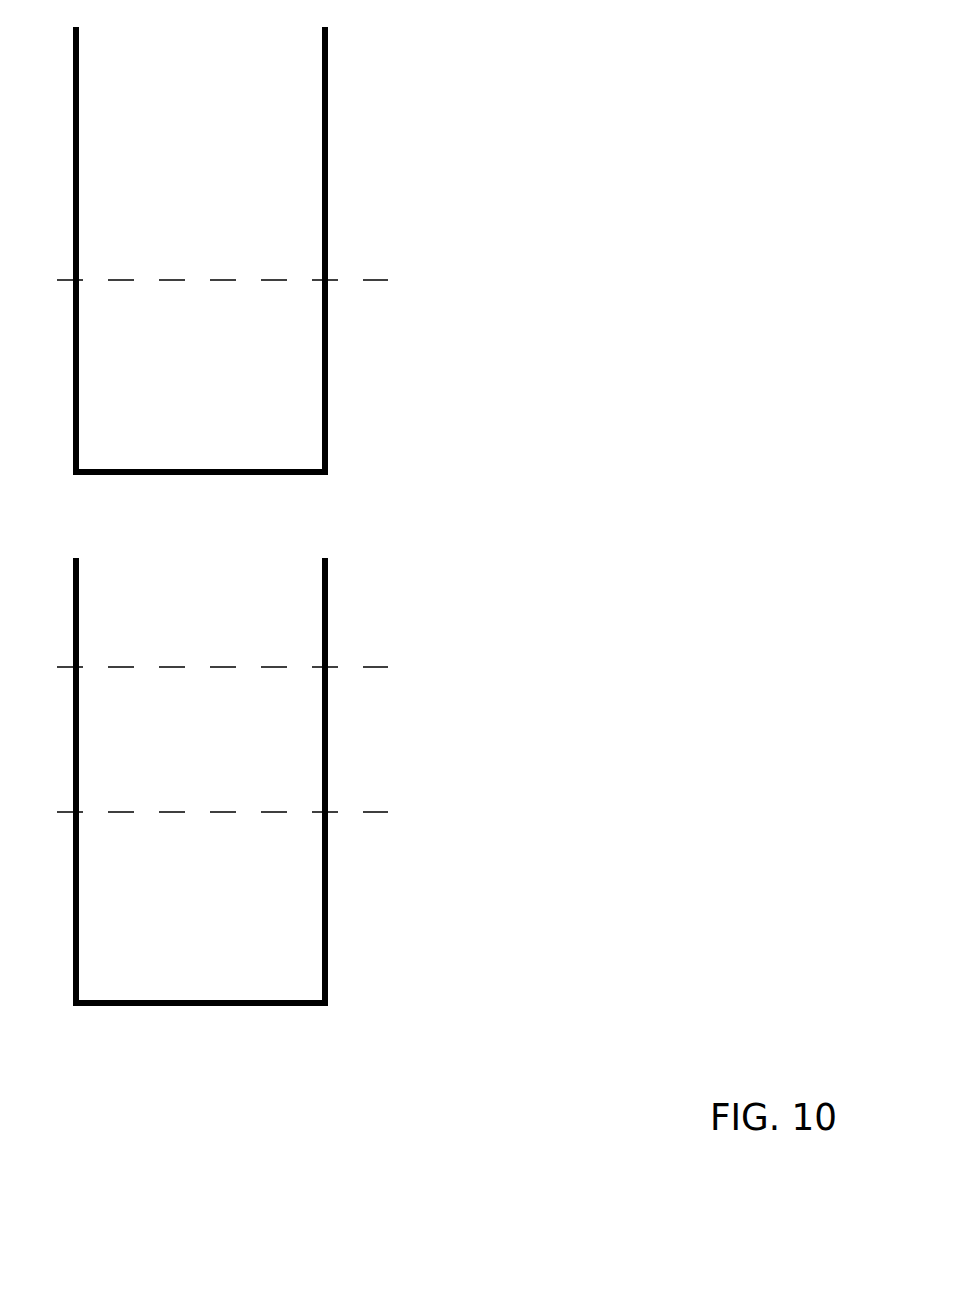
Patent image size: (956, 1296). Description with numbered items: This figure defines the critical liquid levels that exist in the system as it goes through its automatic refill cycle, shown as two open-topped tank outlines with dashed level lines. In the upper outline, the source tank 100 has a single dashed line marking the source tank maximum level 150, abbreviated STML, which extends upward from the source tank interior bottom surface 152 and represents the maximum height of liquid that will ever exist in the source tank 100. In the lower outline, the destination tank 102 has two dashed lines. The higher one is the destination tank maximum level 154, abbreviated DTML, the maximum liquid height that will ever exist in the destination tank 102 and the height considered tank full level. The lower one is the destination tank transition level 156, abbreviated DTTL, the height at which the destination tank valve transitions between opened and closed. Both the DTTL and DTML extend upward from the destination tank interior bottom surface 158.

The source tank 100 is at (328, 44).
The source tank maximum level 150 is at (333, 280).
The source tank interior bottom surface 152 is at (285, 470).
The destination tank 102 is at (328, 575).
The destination tank maximum level 154 is at (333, 667).
The destination tank transition level 156 is at (333, 812).
The destination tank interior bottom surface 158 is at (285, 1001).